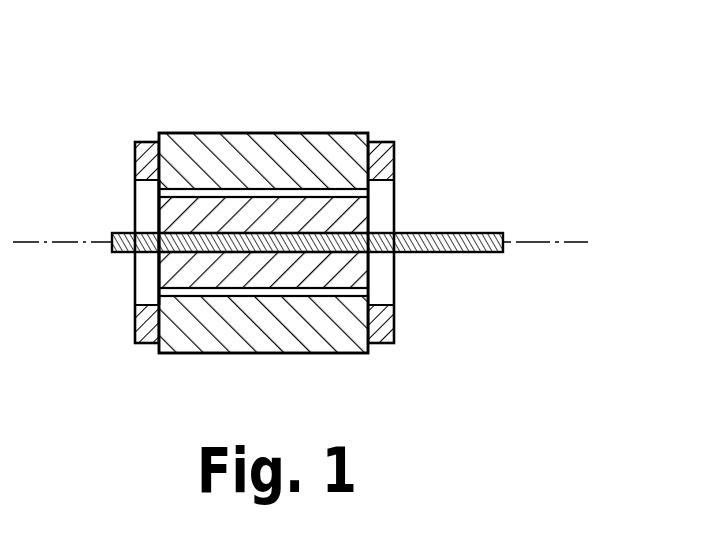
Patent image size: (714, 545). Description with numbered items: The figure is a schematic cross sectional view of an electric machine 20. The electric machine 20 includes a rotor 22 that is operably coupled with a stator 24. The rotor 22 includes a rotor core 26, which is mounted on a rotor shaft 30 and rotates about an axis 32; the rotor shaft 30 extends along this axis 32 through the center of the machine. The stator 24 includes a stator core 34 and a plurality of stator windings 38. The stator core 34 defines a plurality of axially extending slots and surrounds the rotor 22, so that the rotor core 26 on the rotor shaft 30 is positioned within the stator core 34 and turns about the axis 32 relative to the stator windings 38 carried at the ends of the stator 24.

The electric machine 20 is at (302, 212).
The rotor 22 is at (148, 219).
The stator 24 is at (318, 120).
The rotor core 26 is at (357, 216).
The rotor shaft 30 is at (467, 253).
The axis 32 is at (572, 242).
The stator core 34 is at (250, 134).
The stator windings 38 is at (385, 142).